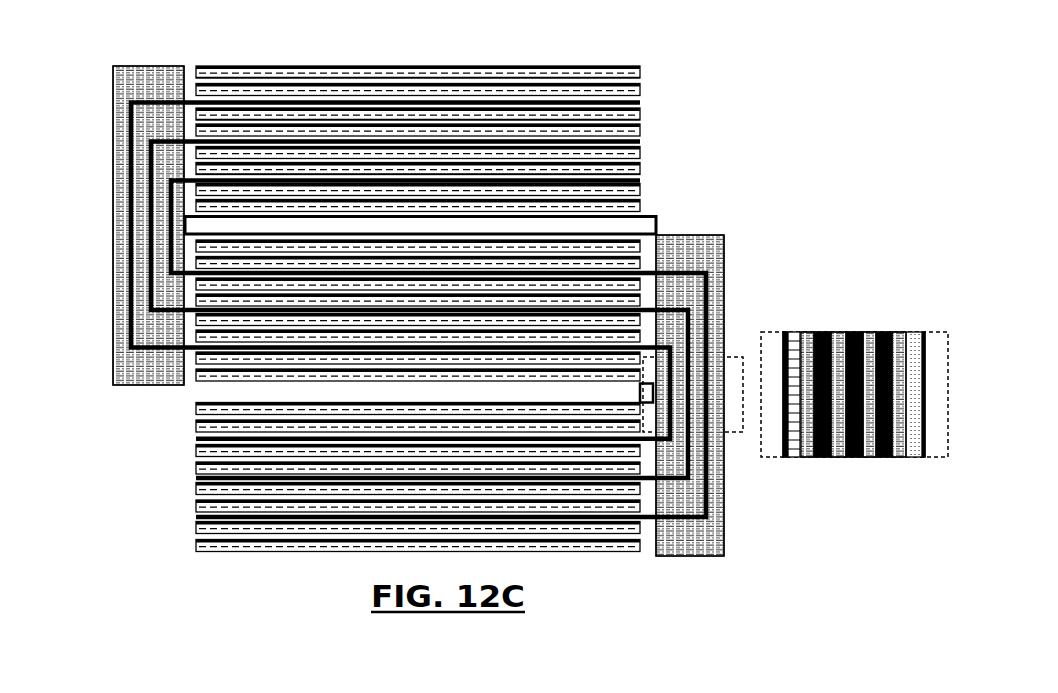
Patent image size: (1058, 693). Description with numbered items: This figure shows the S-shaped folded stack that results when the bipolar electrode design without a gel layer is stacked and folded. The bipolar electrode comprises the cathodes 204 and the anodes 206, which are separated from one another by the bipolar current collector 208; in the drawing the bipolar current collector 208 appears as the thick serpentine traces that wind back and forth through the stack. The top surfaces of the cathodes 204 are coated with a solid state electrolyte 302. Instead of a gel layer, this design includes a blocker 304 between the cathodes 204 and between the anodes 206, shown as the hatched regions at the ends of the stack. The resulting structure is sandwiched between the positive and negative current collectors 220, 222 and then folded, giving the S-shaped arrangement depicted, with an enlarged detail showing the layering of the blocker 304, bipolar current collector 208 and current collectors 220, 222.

The blocker 304 is at (142, 57).
The positive current collector 220 is at (595, 58).
The solid state electrolyte 302 is at (628, 73).
The cathodes 204 is at (630, 110).
The bipolar current collector 208 is at (630, 133).
The anodes 206 is at (632, 165).
The negative current collector 222 is at (640, 225).